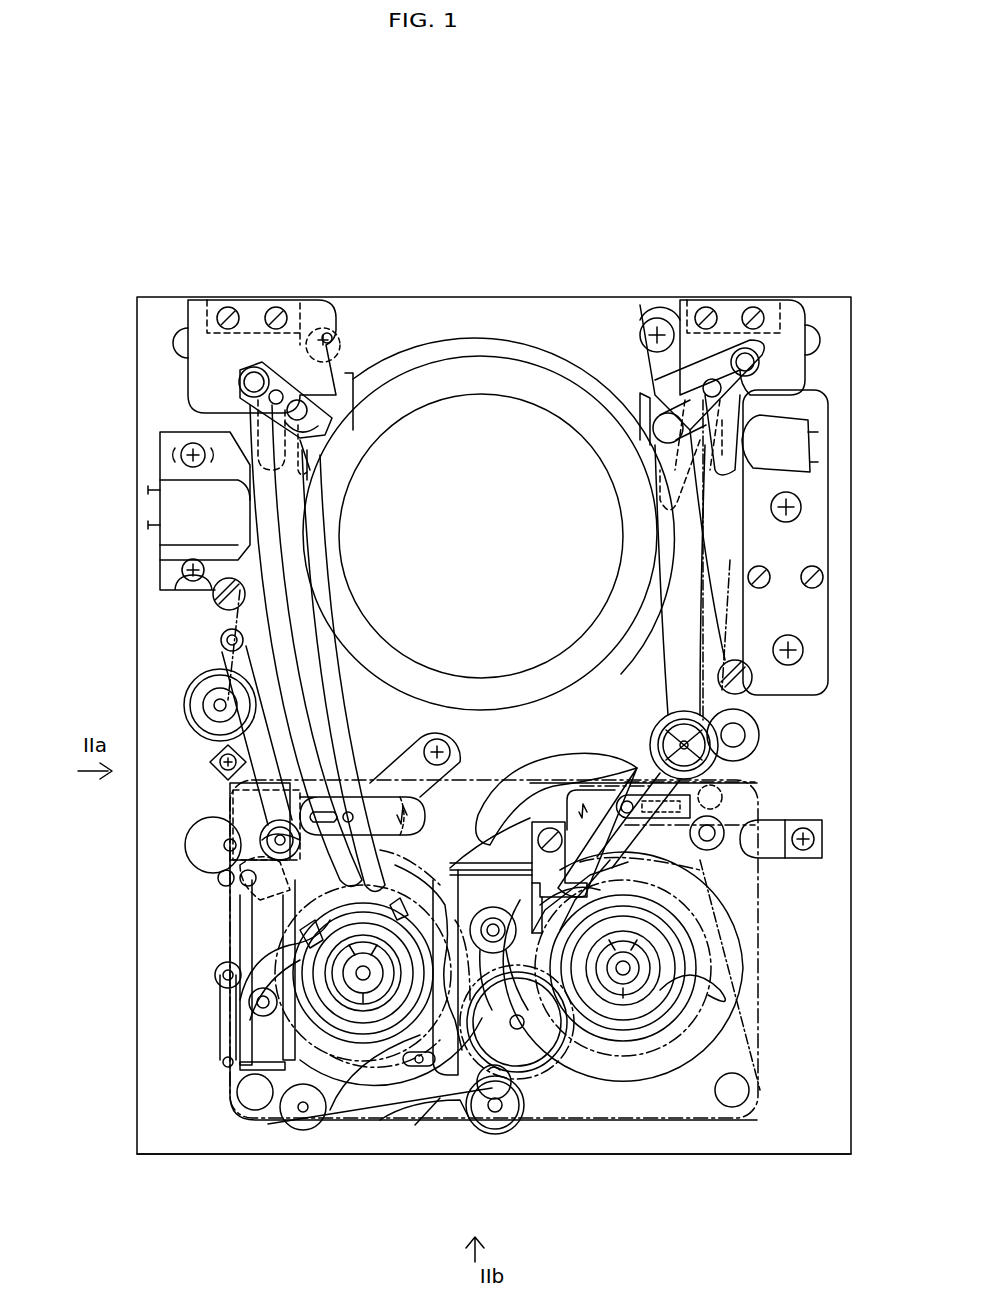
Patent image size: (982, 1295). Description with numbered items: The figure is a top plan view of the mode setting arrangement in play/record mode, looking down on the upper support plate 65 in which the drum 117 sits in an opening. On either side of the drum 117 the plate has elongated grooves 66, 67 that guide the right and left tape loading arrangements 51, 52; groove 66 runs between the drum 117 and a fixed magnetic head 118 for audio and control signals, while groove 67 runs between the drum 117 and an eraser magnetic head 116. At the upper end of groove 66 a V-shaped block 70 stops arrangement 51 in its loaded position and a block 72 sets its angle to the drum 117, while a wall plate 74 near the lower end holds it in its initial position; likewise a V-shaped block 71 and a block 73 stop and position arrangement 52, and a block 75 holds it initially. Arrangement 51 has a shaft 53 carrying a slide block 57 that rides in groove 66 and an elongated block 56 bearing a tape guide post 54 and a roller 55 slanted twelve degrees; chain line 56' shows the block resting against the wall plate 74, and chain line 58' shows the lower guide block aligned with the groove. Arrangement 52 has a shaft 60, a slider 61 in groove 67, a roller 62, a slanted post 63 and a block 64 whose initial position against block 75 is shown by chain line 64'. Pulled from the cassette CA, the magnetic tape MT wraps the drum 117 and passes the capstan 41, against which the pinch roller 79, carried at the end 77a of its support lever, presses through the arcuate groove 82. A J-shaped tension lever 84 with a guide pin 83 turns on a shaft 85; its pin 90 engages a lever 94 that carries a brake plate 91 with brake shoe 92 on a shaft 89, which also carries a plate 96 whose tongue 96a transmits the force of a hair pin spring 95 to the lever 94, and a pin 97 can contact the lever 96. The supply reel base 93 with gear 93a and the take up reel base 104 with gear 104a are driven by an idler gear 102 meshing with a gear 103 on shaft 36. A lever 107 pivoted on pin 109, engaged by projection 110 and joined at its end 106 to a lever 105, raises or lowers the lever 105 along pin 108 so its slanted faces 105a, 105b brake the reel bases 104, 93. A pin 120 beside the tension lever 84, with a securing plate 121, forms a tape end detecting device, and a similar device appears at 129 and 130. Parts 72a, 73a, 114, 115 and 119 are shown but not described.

The shaft 36 is at (470, 1128).
The capstan 41 is at (746, 738).
The tape loading arrangement 51 is at (750, 395).
The tape loading arrangement 52 is at (307, 472).
The shaft 53 is at (700, 392).
The tape guide post 54 is at (762, 360).
The roller 55 is at (660, 430).
The elongated block 56 is at (776, 443).
The chain line 56' is at (604, 818).
The elongated slide block 57 is at (700, 452).
The chain line 58' is at (720, 803).
The shaft 60 is at (248, 396).
The slider 61 is at (292, 490).
The roller 62 is at (245, 373).
The post 63 is at (304, 420).
The block 64 is at (319, 418).
The chain line 64' is at (380, 778).
The upper support plate 65 is at (219, 1195).
The elongated groove 66 is at (700, 658).
The elongated groove 67 is at (303, 670).
The V-shaped block 70 is at (727, 300).
The V-shaped block 71 is at (213, 300).
The block 72 is at (652, 362).
The screw 72a is at (655, 330).
The block 73 is at (345, 350).
The pin 73a is at (333, 342).
The wall plate 74 is at (545, 790).
The block 75 is at (435, 775).
The end of pinch roller support lever 77a is at (672, 725).
The pinch roller 79 is at (710, 760).
The arcuate groove 82 is at (490, 800).
The guide pin 83 is at (222, 640).
The tension lever 84 is at (250, 660).
The shaft 85 is at (220, 850).
The shaft 89 is at (285, 1020).
The pin 90 is at (262, 862).
The brake plate 91 is at (280, 1000).
The brake shoe 92 is at (290, 1000).
The supply reel base 93 is at (330, 1010).
The gear 93a is at (352, 1045).
The lever 94 is at (272, 970).
The hair pin spring 95 is at (250, 1045).
The plate 96 is at (262, 905).
The tongue 96a is at (262, 953).
The pin 97 is at (230, 876).
The idler gear 102 is at (518, 1086).
The gear 103 is at (527, 1112).
The take up reel base 104 is at (718, 1026).
The gear 104a is at (708, 995).
The lever 105 is at (462, 885).
The slanted face 105a is at (606, 892).
The slanted face 105b is at (440, 900).
The end of lever 106 is at (502, 1132).
The lever 107 is at (385, 1105).
The pin 108 is at (517, 1028).
The pin 109 is at (303, 1128).
The projection 110 is at (404, 1108).
The pulley 114 is at (210, 700).
The screw 115 is at (215, 600).
The eraser magnetic head 116 is at (178, 507).
The drum 117 is at (376, 668).
The fixed magnetic head 118 is at (812, 440).
The screw 119 is at (752, 692).
The pin 120 is at (245, 825).
The securing plate 121 is at (240, 792).
The tape end detecting device 129 is at (760, 918).
The tape end detecting device 130 is at (783, 860).
The cassette CA is at (228, 1108).
The magnetic tape MT is at (748, 630).